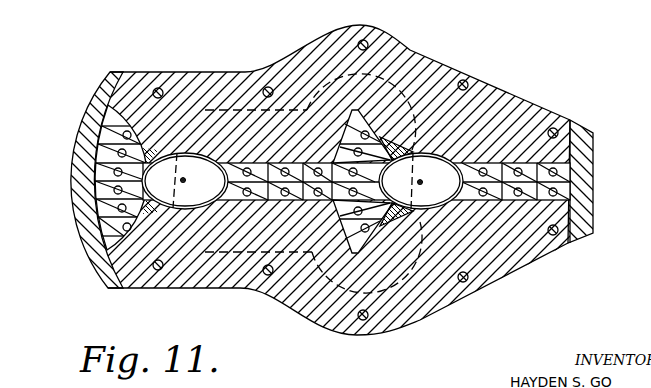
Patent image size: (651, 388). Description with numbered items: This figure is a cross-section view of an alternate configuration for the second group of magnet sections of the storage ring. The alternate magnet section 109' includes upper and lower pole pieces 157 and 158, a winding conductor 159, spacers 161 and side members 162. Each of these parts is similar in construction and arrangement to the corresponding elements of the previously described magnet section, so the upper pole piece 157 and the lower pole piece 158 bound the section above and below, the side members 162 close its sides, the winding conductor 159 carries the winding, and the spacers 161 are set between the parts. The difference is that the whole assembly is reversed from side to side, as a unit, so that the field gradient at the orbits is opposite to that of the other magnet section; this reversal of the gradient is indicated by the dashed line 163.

The alternate magnet section 109' is at (546, 42).
The upper pole piece 157 is at (291, 64).
The lower pole piece 158 is at (285, 303).
The winding conductor 159 is at (332, 135).
The spacer 161 is at (463, 153).
The side member 162 is at (76, 206).
The dashed line 163 is at (418, 253).